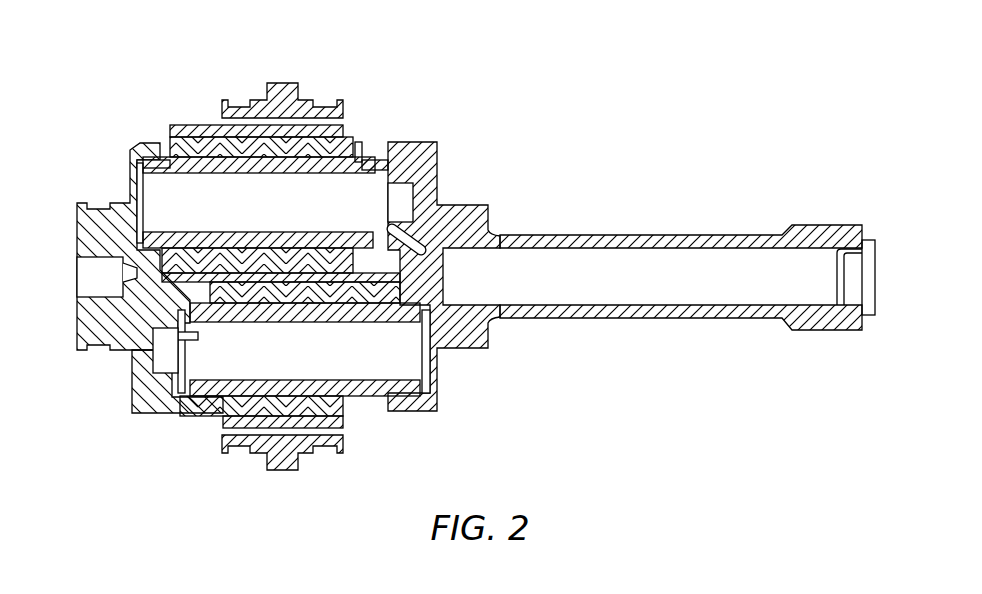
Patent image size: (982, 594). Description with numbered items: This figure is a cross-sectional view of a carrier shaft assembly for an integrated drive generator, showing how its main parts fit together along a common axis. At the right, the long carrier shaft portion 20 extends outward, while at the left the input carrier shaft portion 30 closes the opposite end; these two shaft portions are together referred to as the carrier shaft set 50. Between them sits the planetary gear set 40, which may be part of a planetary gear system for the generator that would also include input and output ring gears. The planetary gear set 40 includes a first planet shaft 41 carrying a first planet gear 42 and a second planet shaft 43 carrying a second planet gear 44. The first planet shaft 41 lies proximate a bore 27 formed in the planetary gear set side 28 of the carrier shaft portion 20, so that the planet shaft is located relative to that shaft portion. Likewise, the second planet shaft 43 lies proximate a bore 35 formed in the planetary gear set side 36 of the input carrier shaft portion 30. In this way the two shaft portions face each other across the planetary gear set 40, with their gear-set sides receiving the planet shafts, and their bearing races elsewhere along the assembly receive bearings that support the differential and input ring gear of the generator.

The carrier shaft portion 20 is at (505, 245).
The bore 27 is at (400, 194).
The planetary gear set side 28 is at (385, 222).
The input carrier shaft portion 30 is at (93, 217).
The bore 35 is at (163, 340).
The planetary gear set side 36 is at (175, 410).
The planetary gear set 40 is at (245, 280).
The first planet shaft 41 is at (365, 160).
The first planet gear 42 is at (190, 142).
The second planet shaft 43 is at (437, 383).
The second planet gear 44 is at (220, 413).
The carrier shaft set 50 is at (623, 192).